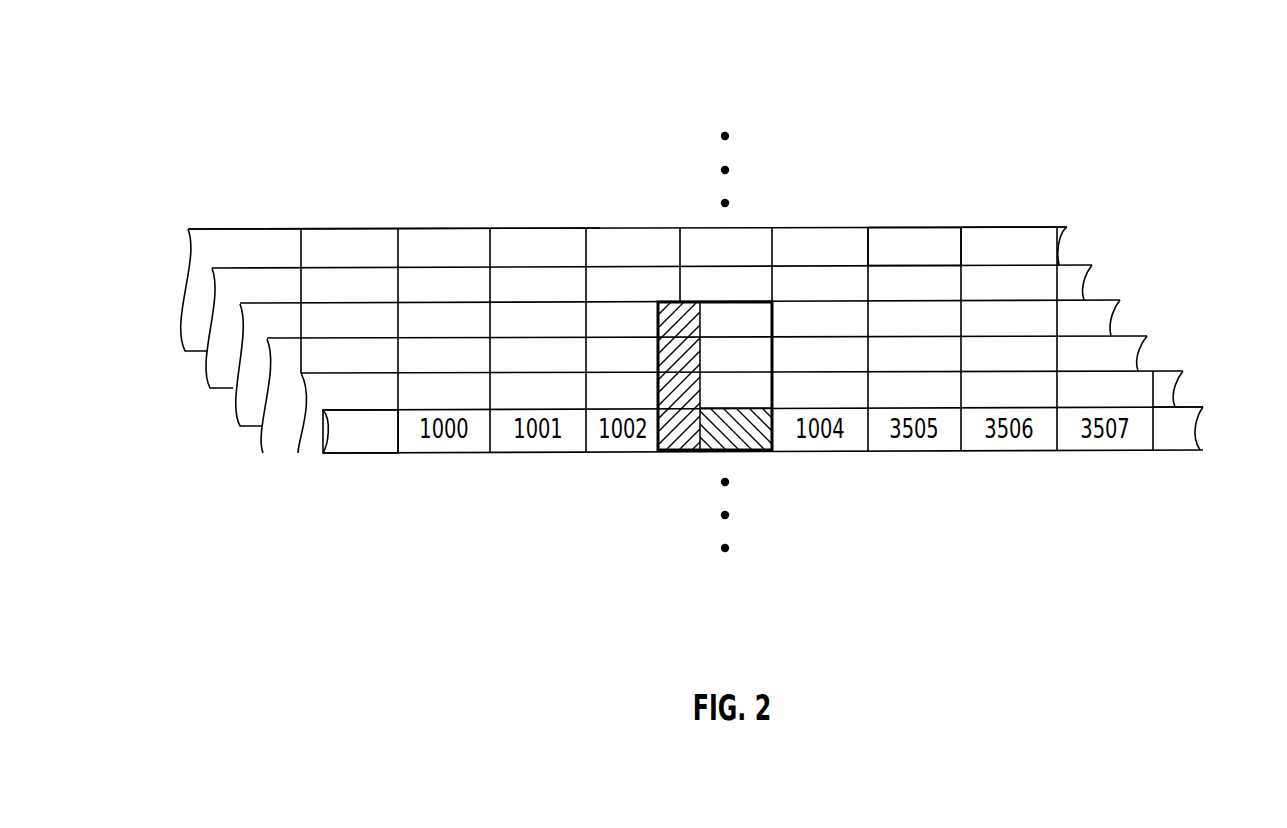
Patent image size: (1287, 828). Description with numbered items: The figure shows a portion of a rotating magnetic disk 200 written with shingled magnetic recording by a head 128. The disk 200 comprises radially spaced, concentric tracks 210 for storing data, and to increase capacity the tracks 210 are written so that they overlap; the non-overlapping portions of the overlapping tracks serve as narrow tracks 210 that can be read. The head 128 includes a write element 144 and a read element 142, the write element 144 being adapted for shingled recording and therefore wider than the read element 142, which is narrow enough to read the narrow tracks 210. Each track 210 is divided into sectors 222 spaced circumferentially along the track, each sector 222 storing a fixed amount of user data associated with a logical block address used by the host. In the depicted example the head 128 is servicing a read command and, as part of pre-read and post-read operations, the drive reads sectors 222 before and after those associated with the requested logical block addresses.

The disk 200 is at (529, 140).
The sectors 222 is at (923, 240).
The tracks 210 is at (1065, 247).
The head 128 is at (774, 393).
The write element 144 is at (688, 440).
The read element 142 is at (735, 453).